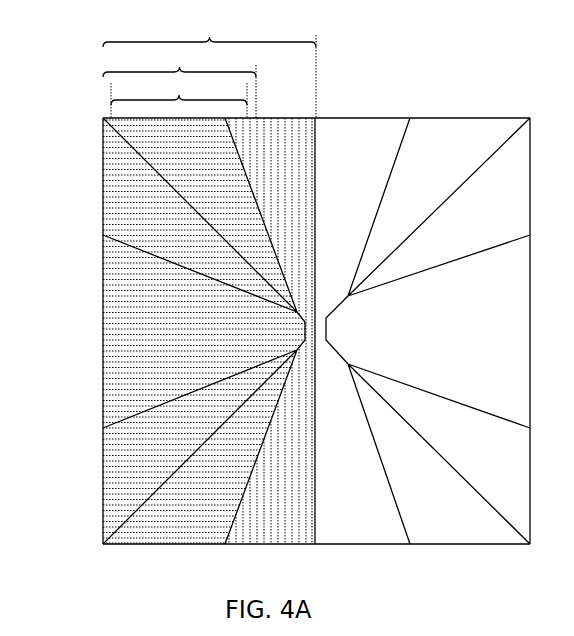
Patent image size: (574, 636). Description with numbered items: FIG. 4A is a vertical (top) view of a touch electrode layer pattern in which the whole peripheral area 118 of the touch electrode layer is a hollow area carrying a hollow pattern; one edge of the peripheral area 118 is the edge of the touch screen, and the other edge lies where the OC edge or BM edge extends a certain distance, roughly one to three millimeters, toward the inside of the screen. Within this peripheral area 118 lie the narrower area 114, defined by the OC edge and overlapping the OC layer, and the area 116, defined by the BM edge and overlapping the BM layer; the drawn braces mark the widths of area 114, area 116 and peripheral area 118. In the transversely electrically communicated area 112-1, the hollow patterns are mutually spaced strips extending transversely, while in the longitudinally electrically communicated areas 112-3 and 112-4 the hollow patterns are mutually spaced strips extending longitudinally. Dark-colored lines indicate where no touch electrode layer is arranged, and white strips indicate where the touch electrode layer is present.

The transversely electrically communicated area 112-1 is at (103, 355).
The longitudinally electrically communicated area 112-3 is at (361, 122).
The longitudinally electrically communicated area 112-4 is at (362, 544).
The area defined by the OC edge 114 is at (179, 98).
The area defined by the BM edge 116 is at (179, 83).
The peripheral area 118 is at (209, 68).